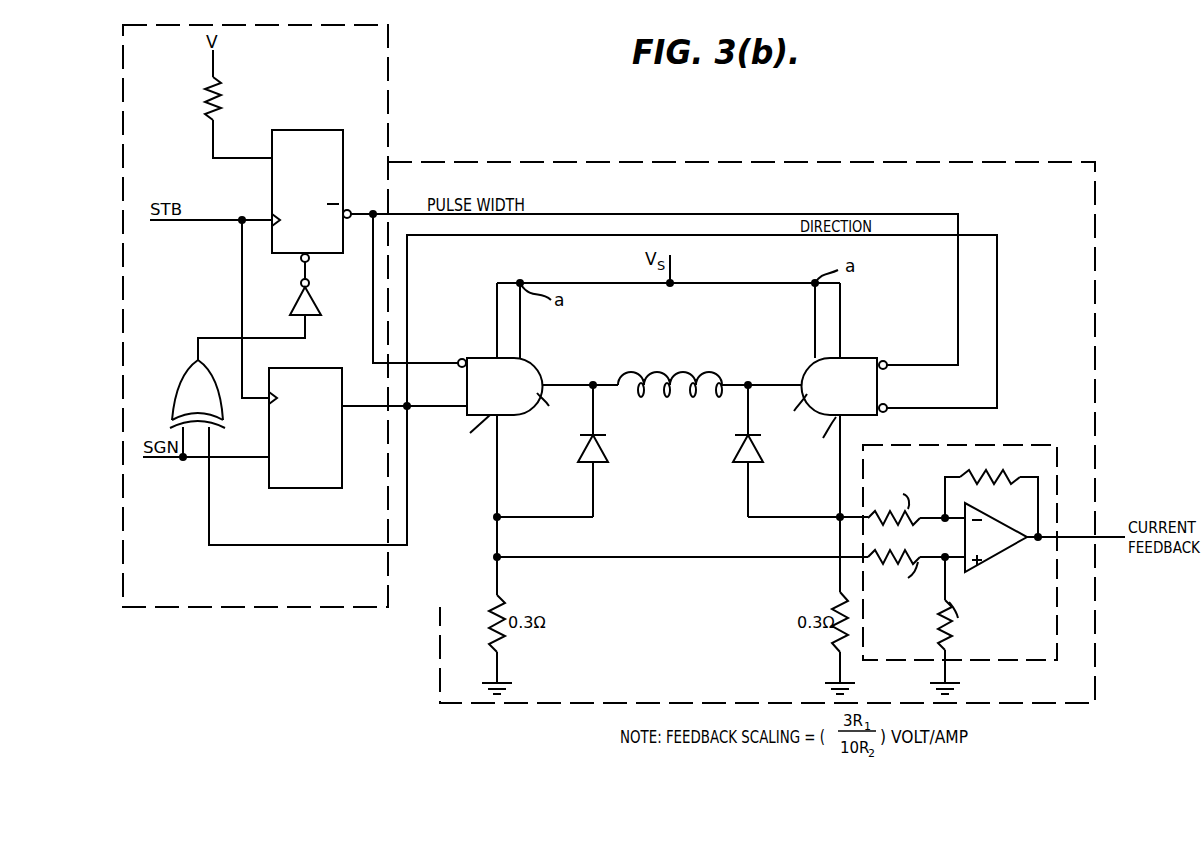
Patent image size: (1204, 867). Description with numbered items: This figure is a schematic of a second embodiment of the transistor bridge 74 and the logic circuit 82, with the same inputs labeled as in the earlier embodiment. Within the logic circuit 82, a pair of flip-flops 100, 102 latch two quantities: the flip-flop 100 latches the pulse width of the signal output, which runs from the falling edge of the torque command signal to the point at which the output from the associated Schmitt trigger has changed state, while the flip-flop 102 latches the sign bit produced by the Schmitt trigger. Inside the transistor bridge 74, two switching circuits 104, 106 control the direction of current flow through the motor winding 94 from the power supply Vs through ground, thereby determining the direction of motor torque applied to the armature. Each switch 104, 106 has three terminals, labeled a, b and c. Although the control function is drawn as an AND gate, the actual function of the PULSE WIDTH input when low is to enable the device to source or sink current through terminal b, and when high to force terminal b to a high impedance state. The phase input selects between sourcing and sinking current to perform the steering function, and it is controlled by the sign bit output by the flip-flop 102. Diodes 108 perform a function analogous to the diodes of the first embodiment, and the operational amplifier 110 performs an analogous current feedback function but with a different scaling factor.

The transistor bridge 74 is at (761, 142).
The logic circuit 82 is at (422, 72).
The motor winding 94 is at (684, 372).
The flip-flop 100 is at (306, 131).
The flip-flop 102 is at (317, 370).
The switching circuit 104 is at (482, 359).
The switching circuit 106 is at (858, 359).
The diodes 108 is at (598, 462).
The operational amplifier 110 is at (1012, 432).